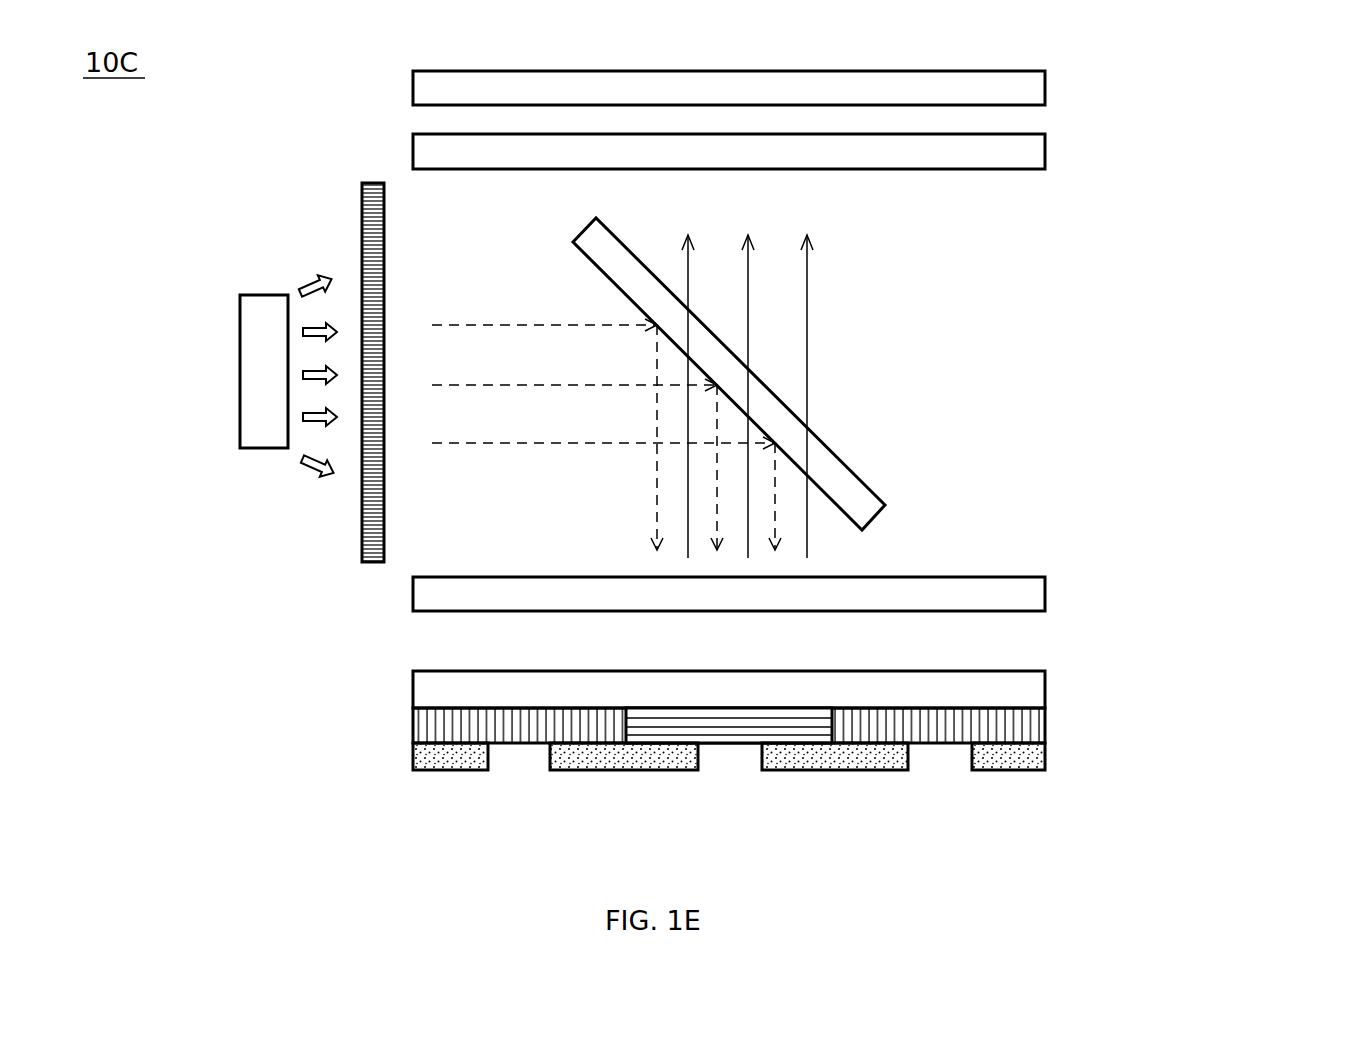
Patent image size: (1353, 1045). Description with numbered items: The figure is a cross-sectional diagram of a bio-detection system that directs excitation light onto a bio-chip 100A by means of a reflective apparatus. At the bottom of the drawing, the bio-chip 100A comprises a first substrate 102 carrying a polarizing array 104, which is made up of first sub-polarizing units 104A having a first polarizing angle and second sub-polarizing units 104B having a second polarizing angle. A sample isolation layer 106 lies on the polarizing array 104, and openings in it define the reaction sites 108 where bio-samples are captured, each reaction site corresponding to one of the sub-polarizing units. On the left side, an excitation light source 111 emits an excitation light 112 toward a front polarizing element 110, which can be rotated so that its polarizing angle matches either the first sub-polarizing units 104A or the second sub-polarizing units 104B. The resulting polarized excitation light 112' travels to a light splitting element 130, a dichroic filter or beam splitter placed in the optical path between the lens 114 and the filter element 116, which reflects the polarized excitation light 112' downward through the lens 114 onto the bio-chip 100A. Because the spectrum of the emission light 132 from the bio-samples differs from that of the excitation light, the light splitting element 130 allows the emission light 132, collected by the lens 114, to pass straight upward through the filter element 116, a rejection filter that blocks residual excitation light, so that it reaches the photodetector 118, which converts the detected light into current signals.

The bio-chip 100A is at (804, 527).
The first substrate 102 is at (411, 690).
The polarizing array 104 is at (804, 522).
The first sub-polarizing units 104A is at (411, 727).
The second sub-polarizing units 104B is at (730, 746).
The sample isolation layer 106 is at (411, 758).
The reaction sites 108 is at (945, 775).
The front polarizing element 110 is at (360, 226).
The excitation light source 111 is at (238, 377).
The excitation light 112 is at (283, 404).
The polarized excitation light 112' is at (606, 401).
The lens 114 is at (411, 594).
The filter element 116 is at (411, 152).
The photodetector 118 is at (411, 88).
The light splitting element 130 is at (860, 477).
The emission light 132 is at (810, 288).